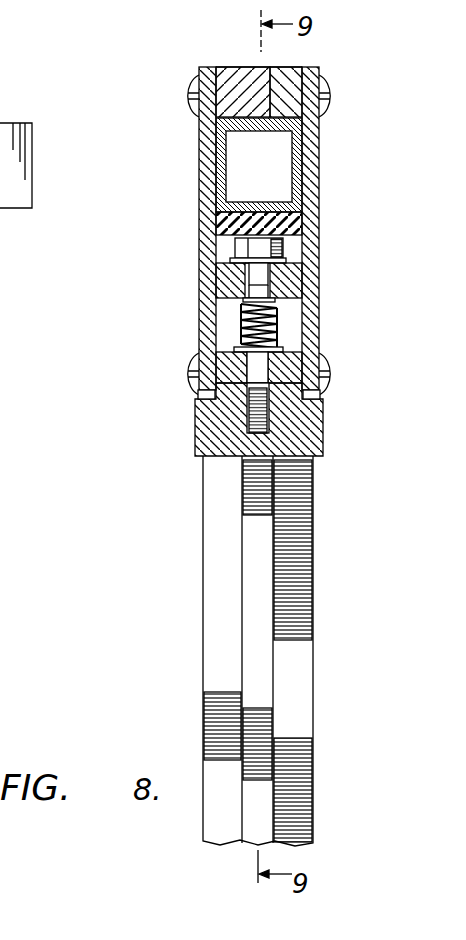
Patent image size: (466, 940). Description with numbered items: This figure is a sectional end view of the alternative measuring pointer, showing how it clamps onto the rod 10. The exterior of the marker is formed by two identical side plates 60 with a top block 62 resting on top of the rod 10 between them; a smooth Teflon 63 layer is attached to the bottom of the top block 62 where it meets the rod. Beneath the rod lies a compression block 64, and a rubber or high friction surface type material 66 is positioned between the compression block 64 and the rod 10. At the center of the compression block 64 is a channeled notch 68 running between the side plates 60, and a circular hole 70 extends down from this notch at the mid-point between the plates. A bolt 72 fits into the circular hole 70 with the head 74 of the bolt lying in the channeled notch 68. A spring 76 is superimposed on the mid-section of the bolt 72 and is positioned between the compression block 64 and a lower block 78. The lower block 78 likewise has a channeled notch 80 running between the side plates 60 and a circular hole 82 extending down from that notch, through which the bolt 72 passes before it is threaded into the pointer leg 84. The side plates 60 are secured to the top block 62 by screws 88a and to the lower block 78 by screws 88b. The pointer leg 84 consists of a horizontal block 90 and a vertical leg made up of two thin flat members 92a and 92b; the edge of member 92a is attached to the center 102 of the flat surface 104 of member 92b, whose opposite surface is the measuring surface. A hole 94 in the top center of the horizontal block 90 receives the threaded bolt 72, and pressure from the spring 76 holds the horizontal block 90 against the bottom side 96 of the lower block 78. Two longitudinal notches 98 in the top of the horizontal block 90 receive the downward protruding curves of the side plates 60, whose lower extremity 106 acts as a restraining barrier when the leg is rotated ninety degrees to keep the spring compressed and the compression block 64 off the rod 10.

The rod 10 is at (278, 134).
The side plates 60 is at (207, 131).
The top block 62 is at (246, 66).
The Teflon 63 is at (304, 120).
The compression block 64 is at (230, 277).
The high friction surface type material 66 is at (294, 220).
The channeled notch 68 is at (214, 246).
The circular hole 70 is at (264, 283).
The bolt 72 is at (255, 288).
The head of the bolt 74 is at (274, 250).
The spring 76 is at (273, 308).
The lower block 78 is at (226, 360).
The channeled notch 80 is at (294, 343).
The circular hole 82 is at (262, 369).
The pointer leg 84 is at (203, 523).
The screws 88a is at (190, 89).
The screws 88b is at (191, 360).
The horizontal block 90 is at (312, 438).
The thin flat member 92a is at (265, 630).
The thin flat member 92b is at (213, 630).
The hole 94 is at (247, 431).
The bottom side of the lower block 96 is at (205, 394).
The longitudinal notches 98 is at (212, 404).
The center of the flat surface 102 is at (242, 568).
The flat surface 104 is at (300, 539).
The lower extremity 106 is at (206, 398).